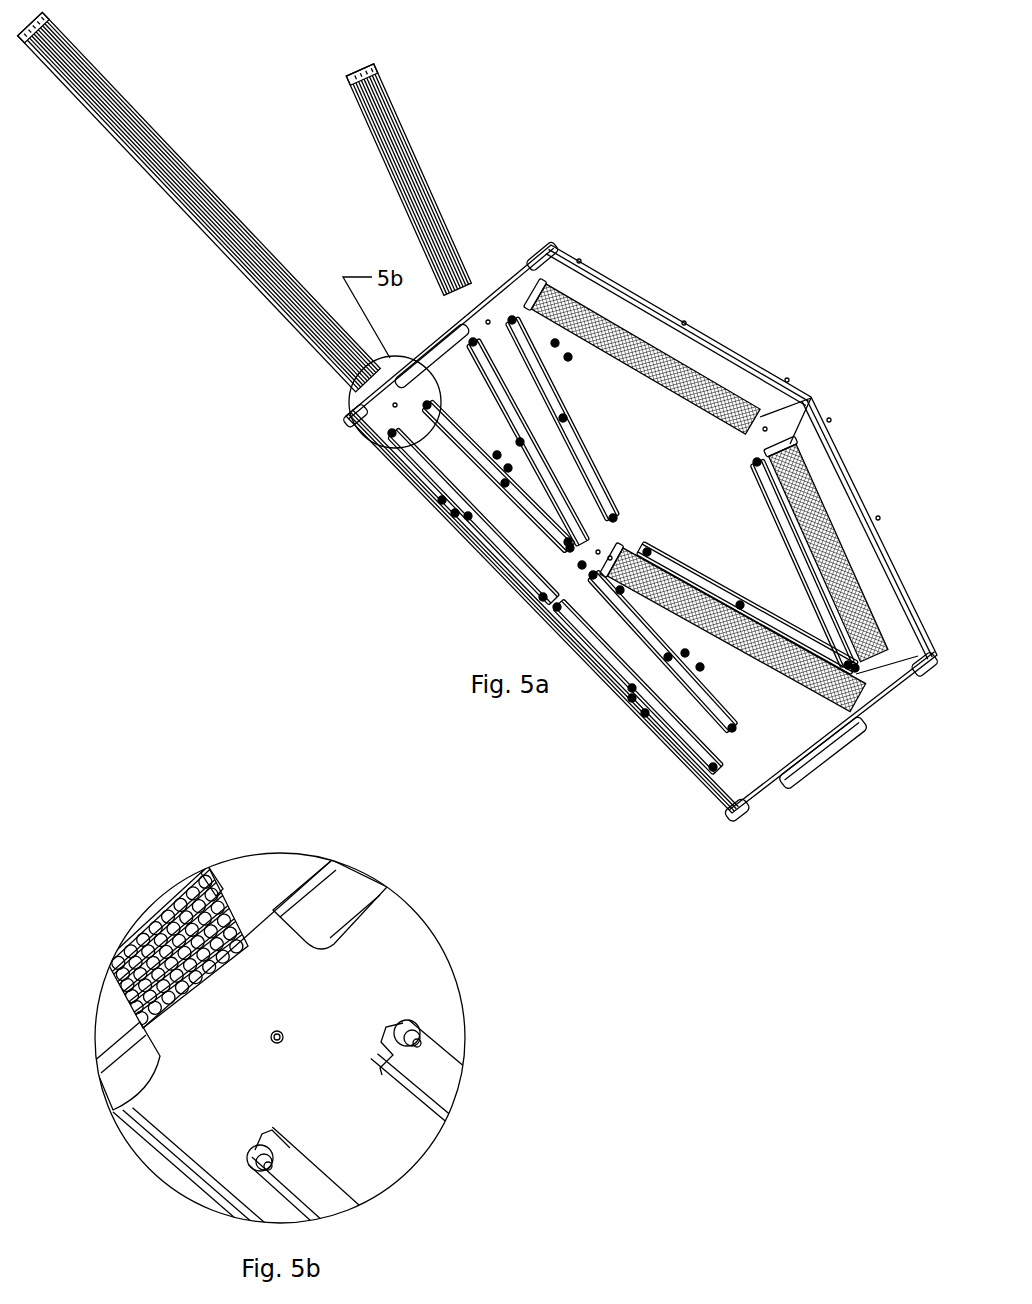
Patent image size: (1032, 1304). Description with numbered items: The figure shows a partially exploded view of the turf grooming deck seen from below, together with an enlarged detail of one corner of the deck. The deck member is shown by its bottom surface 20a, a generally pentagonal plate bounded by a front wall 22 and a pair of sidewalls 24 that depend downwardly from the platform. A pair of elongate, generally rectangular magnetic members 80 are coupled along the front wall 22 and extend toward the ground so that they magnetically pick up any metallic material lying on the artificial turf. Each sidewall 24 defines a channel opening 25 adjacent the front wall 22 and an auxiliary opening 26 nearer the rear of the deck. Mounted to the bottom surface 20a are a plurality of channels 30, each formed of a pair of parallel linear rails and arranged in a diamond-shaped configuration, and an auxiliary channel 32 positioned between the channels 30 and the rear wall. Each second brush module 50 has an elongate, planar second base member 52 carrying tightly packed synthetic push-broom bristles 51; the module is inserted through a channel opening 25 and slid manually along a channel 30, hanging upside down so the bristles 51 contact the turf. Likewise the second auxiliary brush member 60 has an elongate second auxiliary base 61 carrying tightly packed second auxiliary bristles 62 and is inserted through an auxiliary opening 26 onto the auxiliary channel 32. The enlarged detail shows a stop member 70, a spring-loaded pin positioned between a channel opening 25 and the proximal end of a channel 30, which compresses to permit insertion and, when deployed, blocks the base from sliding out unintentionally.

In FIG. 5a, the bottom surface 20a is at (712, 520).
In FIG. 5b, the bottom surface 20a is at (410, 975).
In FIG. 5a, the front wall 22 is at (677, 327).
In FIG. 5a, the sidewall 24 is at (823, 738).
In FIG. 5b, the sidewall 24 is at (343, 885).
In FIG. 5a, the channel opening 25 is at (500, 262).
In FIG. 5a, the auxiliary opening 26 is at (768, 793).
In FIG. 5b, the auxiliary opening 26 is at (260, 970).
In FIG. 5a, the channel 30 is at (580, 448).
In FIG. 5a, the auxiliary channel 32 is at (420, 472).
In FIG. 5b, the auxiliary channel 32 is at (418, 1087).
In FIG. 5a, the second brush module 50 is at (600, 356).
In FIG. 5a, the bristles 51 is at (370, 66).
In FIG. 5a, the second base member 52 is at (415, 147).
In FIG. 5a, the second auxiliary brush member 60 is at (212, 218).
In FIG. 5b, the second auxiliary brush member 60 is at (175, 913).
In FIG. 5a, the second auxiliary base 61 is at (202, 180).
In FIG. 5b, the second auxiliary base 61 is at (212, 875).
In FIG. 5a, the second auxiliary bristles 62 is at (91, 112).
In FIG. 5b, the second auxiliary bristles 62 is at (138, 920).
In FIG. 5b, the stop member 70 is at (285, 1033).
In FIG. 5a, the magnetic member 80 is at (743, 387).